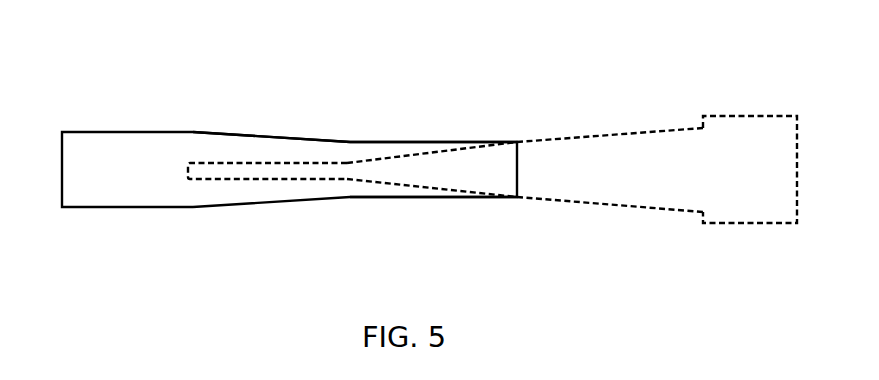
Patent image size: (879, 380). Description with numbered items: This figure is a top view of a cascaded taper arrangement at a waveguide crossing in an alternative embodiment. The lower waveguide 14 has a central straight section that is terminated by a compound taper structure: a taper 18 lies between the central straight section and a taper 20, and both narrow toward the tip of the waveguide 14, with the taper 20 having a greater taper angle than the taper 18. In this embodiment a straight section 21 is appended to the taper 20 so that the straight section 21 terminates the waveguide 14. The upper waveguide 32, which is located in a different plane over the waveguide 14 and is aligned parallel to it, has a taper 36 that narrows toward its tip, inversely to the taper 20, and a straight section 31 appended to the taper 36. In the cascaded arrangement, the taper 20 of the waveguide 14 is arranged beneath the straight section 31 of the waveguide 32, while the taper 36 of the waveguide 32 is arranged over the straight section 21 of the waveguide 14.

The waveguide 14 is at (742, 165).
The taper 18 is at (638, 214).
The taper 20 is at (412, 188).
The straight section 21 is at (286, 185).
The straight section 31 is at (423, 140).
The waveguide 32 is at (110, 173).
The taper 36 is at (278, 136).